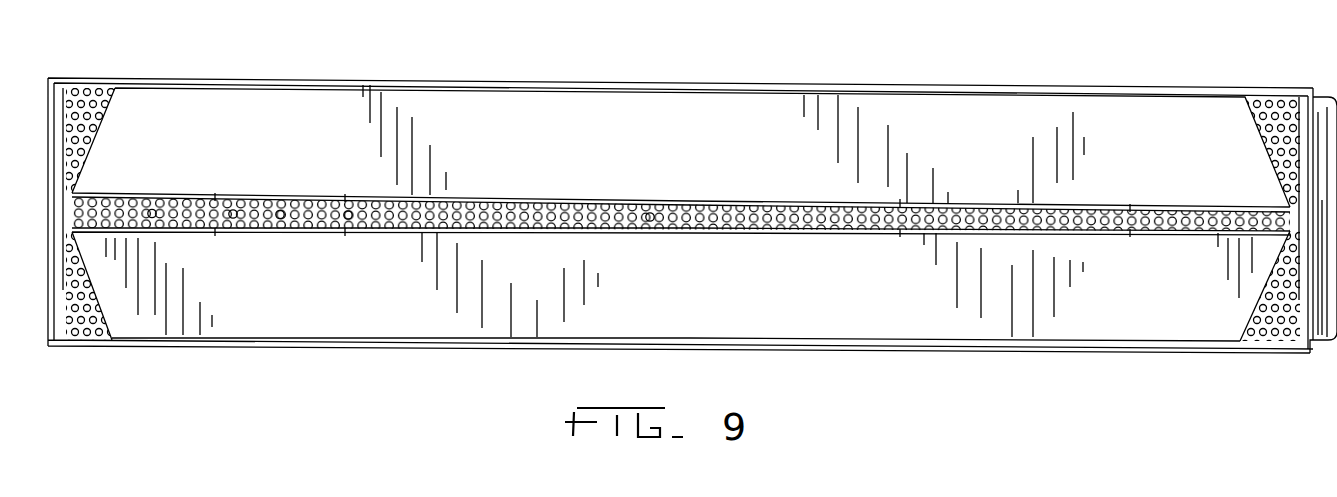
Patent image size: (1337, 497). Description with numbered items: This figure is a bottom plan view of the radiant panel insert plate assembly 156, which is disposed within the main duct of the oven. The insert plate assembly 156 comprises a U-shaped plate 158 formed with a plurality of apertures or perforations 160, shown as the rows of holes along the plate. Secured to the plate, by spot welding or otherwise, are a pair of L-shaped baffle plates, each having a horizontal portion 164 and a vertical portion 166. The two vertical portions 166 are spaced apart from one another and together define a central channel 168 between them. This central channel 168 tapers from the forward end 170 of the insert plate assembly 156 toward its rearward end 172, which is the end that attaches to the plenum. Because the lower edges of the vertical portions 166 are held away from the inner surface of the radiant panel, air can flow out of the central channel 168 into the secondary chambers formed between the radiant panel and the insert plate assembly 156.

The insert plate assembly 156 is at (1205, 72).
The U-shaped plate 158 is at (64, 100).
The apertures or perforations 160 is at (233, 201).
The horizontal portions 164 is at (448, 127).
The vertical portions 166 is at (480, 197).
The central channel 168 is at (653, 212).
The forward end 170 is at (88, 347).
The rearward end 172 is at (1263, 355).